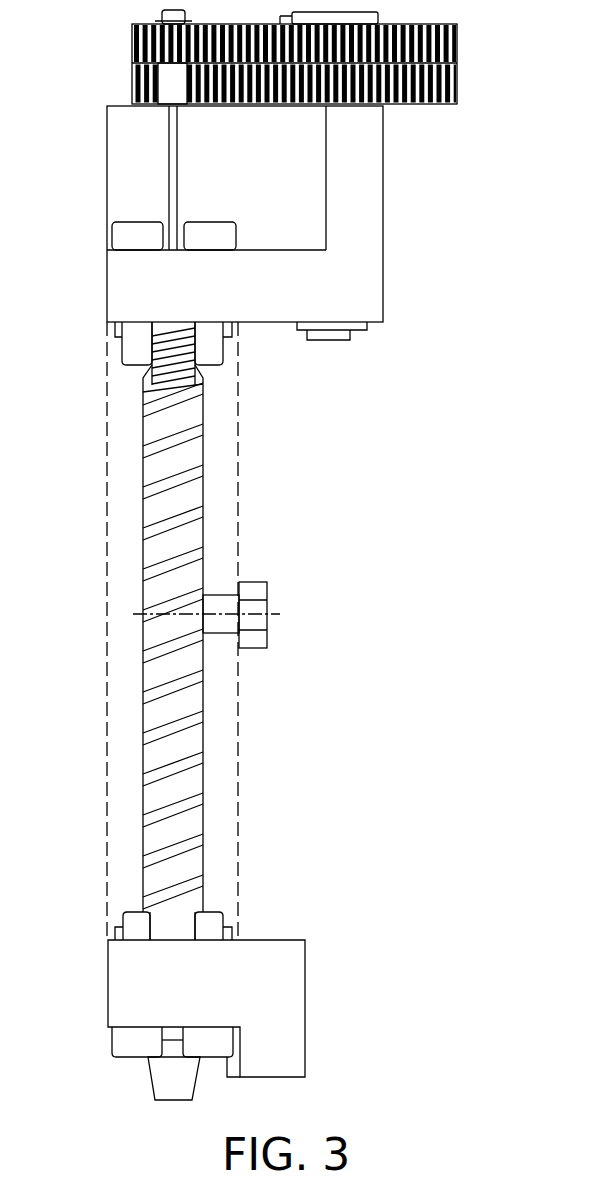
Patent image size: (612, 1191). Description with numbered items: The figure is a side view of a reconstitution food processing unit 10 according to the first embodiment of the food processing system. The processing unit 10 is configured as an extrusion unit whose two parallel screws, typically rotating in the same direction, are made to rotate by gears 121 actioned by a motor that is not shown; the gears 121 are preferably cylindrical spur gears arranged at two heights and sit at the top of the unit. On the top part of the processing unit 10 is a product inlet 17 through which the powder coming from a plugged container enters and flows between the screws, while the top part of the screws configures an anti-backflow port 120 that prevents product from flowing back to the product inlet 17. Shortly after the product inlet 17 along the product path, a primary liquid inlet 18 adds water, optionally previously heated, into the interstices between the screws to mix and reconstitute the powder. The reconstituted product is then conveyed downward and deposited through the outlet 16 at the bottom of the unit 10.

The gears 121 is at (460, 48).
The anti-backflow port 120 is at (146, 369).
The product inlet 17 is at (205, 425).
The primary liquid inlet 18 is at (268, 590).
The food processing unit 10 is at (356, 792).
The outlet 16 is at (147, 1078).